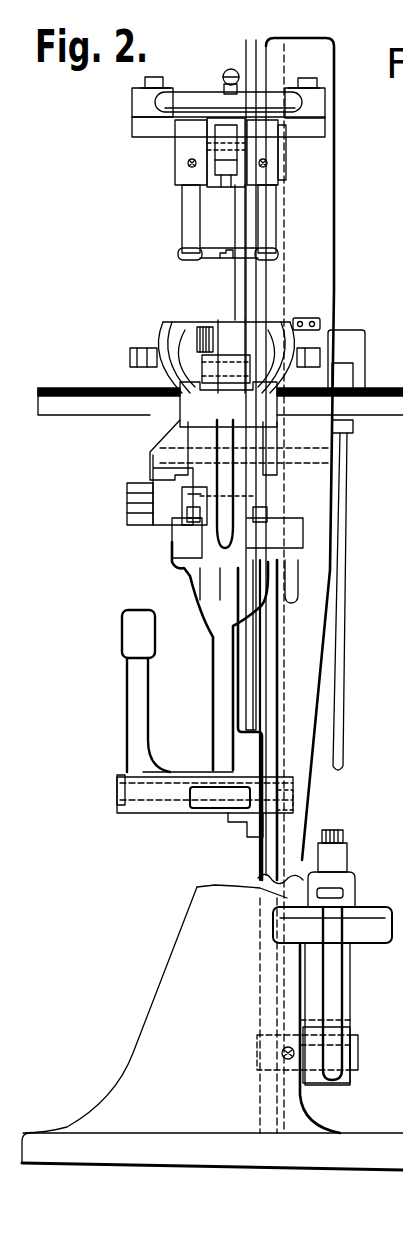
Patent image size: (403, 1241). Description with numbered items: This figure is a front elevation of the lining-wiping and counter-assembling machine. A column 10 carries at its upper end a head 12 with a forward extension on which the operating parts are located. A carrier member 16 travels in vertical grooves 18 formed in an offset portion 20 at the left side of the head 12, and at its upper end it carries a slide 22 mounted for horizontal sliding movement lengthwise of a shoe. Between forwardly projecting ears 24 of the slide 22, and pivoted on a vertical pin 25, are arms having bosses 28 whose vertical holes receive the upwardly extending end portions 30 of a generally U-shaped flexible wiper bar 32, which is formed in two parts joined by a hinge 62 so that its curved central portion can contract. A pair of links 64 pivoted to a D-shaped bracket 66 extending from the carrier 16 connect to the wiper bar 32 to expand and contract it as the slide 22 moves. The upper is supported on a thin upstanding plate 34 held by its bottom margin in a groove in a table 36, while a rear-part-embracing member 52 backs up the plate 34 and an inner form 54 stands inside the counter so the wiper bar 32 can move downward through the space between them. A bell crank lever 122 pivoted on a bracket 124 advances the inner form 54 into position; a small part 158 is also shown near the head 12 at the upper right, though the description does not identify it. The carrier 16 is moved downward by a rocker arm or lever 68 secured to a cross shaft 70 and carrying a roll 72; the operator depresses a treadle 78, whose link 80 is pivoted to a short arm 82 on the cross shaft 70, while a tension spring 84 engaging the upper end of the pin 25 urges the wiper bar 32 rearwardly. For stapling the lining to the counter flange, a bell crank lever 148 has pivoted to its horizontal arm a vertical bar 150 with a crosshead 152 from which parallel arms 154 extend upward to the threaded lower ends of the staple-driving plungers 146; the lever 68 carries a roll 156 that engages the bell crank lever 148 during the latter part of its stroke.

The column 10 is at (212, 1027).
The head 12 is at (299, 585).
The carrier member 16 is at (235, 288).
The vertical grooves 18 is at (257, 44).
The offset portion 20 is at (247, 53).
The slide 22 is at (286, 148).
The forwardly projecting ears 24 is at (212, 125).
The vertical pin 25 is at (226, 88).
The bosses 28 is at (177, 172).
The end portions 30 is at (277, 206).
The wiper member or bar 32 is at (210, 263).
The upstanding plate 34 is at (283, 325).
The table 36 is at (200, 403).
The rear-part-embracing member or shoe 52 is at (177, 326).
The inner form 54 is at (191, 340).
The hinge 62 is at (228, 253).
The links 64 is at (138, 128).
The D-shaped bracket 66 is at (228, 101).
The rocker arm or lever 68 is at (165, 474).
The cross shaft 70 is at (160, 449).
The roll 72 is at (192, 510).
The treadle 78 is at (377, 907).
The link 80 is at (345, 737).
The short arm 82 is at (350, 363).
The tension spring 84 is at (226, 70).
The bell crank lever 122 is at (218, 584).
The bracket 124 is at (288, 598).
The plunger 146 is at (215, 482).
The bell crank lever 148 is at (133, 745).
The vertical bar 150 is at (215, 746).
The crosshead 152 is at (205, 606).
The parallel arms 154 is at (172, 565).
The roll 156 is at (127, 503).
The plate 158 is at (308, 316).